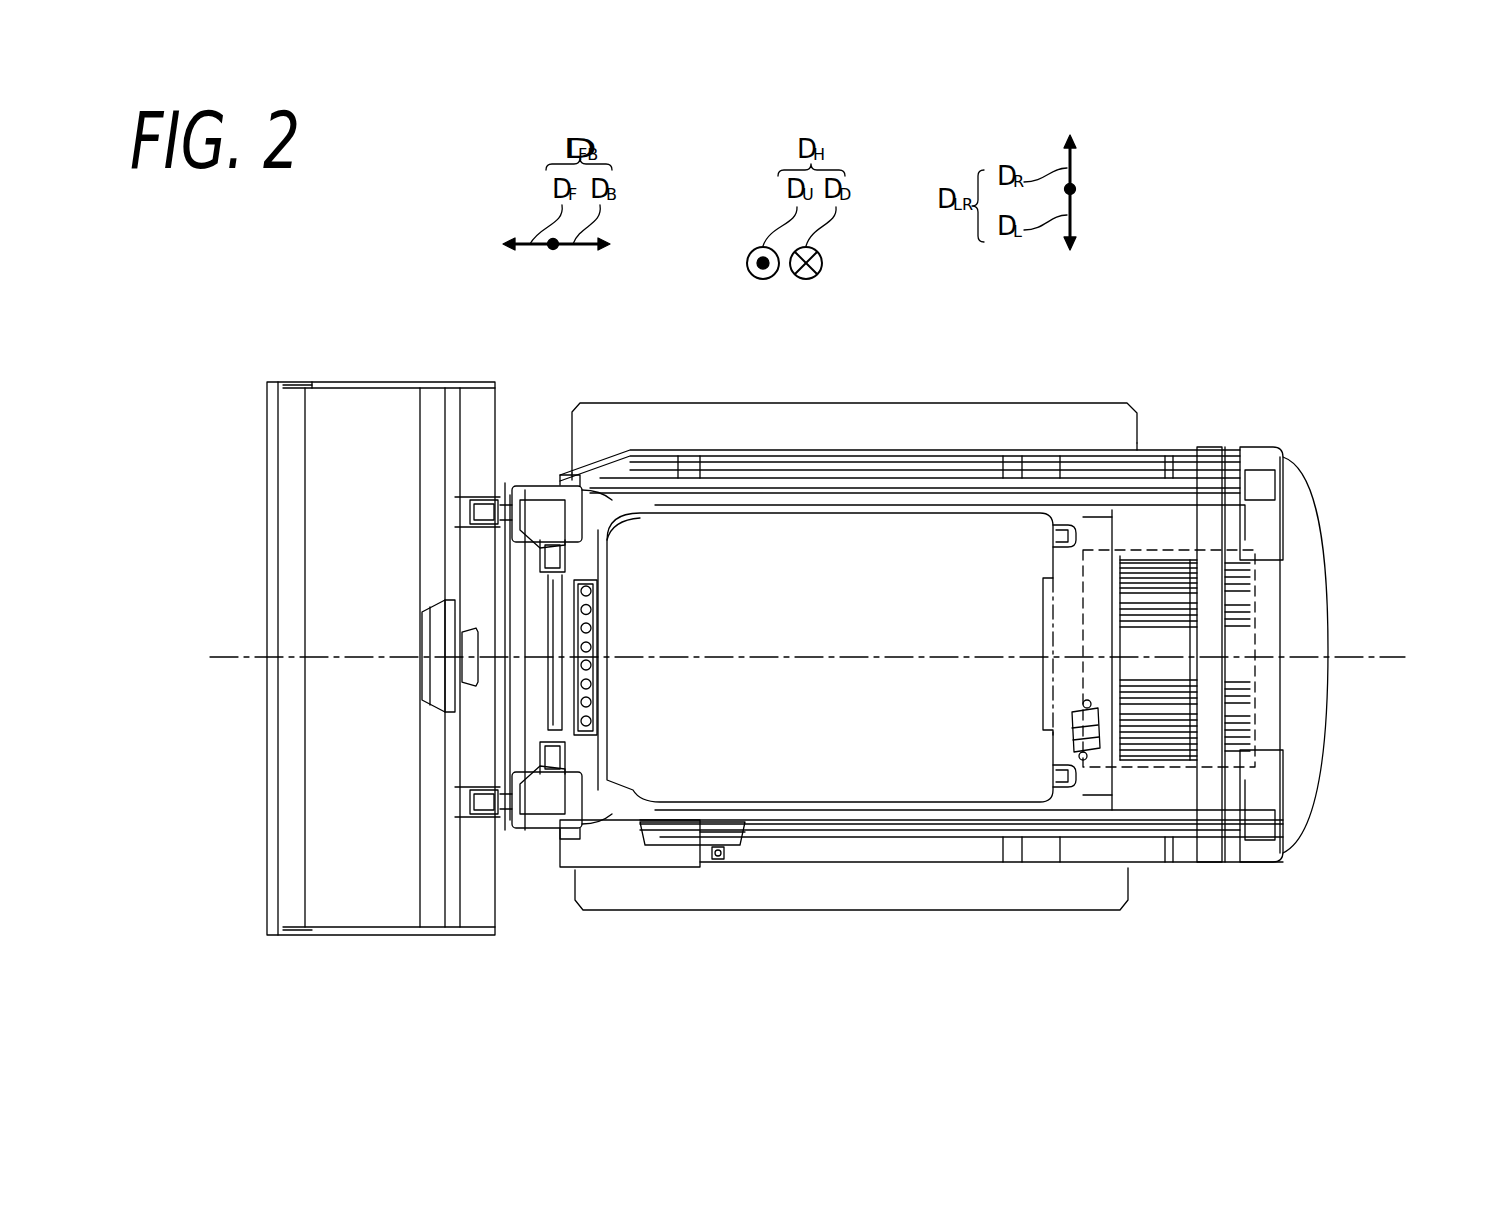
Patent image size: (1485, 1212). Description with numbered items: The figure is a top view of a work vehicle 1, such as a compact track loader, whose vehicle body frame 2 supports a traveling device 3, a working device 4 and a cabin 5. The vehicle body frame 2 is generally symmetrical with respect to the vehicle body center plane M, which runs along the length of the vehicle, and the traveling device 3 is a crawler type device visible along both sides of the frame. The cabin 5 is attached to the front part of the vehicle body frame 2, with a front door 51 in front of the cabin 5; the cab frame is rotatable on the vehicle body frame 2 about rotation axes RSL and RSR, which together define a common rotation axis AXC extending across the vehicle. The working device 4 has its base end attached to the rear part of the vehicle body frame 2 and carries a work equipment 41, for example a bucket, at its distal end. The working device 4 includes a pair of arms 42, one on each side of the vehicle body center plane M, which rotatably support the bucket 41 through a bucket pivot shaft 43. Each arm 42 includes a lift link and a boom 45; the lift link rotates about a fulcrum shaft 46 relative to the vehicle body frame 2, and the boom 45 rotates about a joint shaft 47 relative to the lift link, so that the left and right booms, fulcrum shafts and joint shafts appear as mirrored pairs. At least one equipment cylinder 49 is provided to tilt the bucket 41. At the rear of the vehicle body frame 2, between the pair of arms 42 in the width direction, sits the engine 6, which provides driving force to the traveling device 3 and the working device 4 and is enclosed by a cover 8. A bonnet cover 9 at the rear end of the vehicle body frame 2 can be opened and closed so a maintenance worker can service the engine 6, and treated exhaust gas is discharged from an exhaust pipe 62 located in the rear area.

The work vehicle 1 is at (345, 262).
The vehicle body frame 2 is at (1284, 445).
The traveling device 3 is at (898, 404).
The working device 4 is at (381, 583).
The cabin 5 is at (808, 558).
The engine 6 is at (1255, 750).
The cover 8 is at (1140, 525).
The bonnet cover 9 is at (1308, 570).
The work equipment 41 is at (345, 380).
The arm 42 is at (960, 445).
The bucket pivot shaft 43 is at (517, 758).
The boom 45 is at (818, 465).
The fulcrum shaft 46 is at (1212, 470).
The joint shaft 47 is at (1240, 505).
The equipment cylinder 49 is at (503, 517).
The front door 51 is at (600, 712).
The exhaust pipe 62 is at (1092, 748).
The vehicle body center plane M is at (243, 657).
The rotation axis RSR is at (1065, 522).
The rotation axis RSL is at (1068, 790).
The common rotation axis AXC is at (1058, 790).